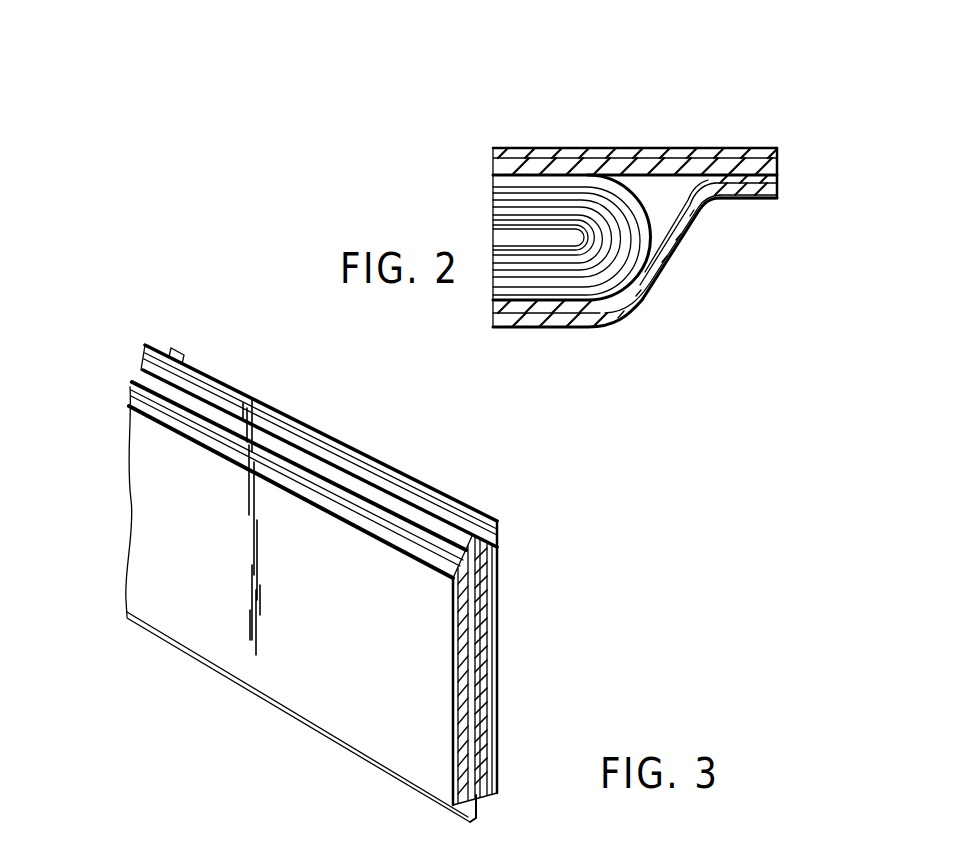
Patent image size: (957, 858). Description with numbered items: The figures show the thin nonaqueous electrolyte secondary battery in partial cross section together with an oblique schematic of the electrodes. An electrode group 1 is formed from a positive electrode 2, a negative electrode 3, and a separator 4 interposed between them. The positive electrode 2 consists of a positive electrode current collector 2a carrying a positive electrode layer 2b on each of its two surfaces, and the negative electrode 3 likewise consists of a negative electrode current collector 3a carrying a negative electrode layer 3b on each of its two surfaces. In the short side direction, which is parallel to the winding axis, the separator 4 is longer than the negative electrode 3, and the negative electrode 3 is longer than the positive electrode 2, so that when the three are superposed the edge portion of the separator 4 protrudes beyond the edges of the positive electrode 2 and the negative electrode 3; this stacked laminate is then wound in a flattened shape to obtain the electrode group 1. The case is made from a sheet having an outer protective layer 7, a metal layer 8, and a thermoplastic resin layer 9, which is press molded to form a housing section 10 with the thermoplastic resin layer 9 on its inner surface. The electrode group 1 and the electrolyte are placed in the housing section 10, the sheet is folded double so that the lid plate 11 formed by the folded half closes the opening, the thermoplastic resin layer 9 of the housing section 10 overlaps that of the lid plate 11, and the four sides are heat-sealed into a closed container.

In FIG. 2, the electrode group 1 is at (632, 186).
In FIG. 2, the positive electrode 2 is at (635, 208).
In FIG. 3, the positive electrode 2 is at (273, 561).
In FIG. 3, the positive electrode current collector 2a is at (276, 452).
In FIG. 3, the positive electrode layer 2b is at (272, 446).
In FIG. 2, the negative electrode 3 is at (557, 183).
In FIG. 3, the negative electrode 3 is at (528, 670).
In FIG. 3, the negative electrode current collector 3a is at (515, 667).
In FIG. 3, the negative electrode layer 3b is at (506, 672).
In FIG. 2, the separator 4 is at (566, 192).
In FIG. 3, the separator 4 is at (502, 671).
In FIG. 2, the outer protective layer 7 is at (766, 178).
In FIG. 2, the metal layer 8 is at (746, 215).
In FIG. 2, the thermoplastic resin layer 9 is at (709, 238).
In FIG. 2, the housing section 10 is at (673, 249).
In FIG. 2, the lid plate 11 is at (732, 120).